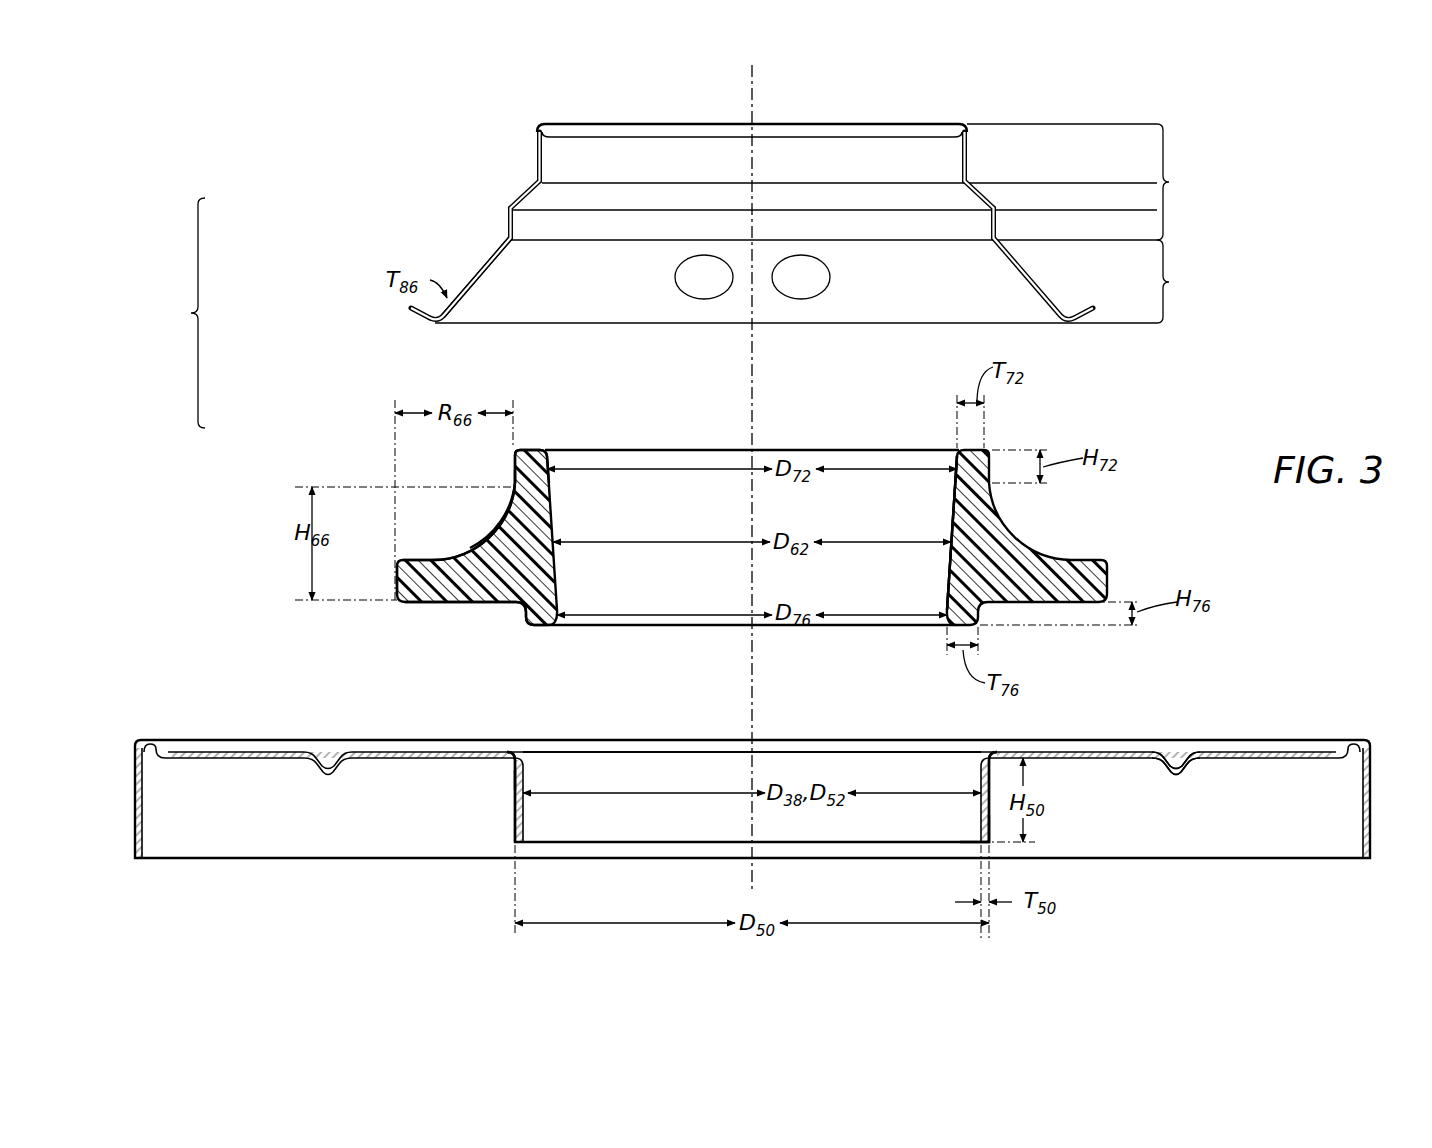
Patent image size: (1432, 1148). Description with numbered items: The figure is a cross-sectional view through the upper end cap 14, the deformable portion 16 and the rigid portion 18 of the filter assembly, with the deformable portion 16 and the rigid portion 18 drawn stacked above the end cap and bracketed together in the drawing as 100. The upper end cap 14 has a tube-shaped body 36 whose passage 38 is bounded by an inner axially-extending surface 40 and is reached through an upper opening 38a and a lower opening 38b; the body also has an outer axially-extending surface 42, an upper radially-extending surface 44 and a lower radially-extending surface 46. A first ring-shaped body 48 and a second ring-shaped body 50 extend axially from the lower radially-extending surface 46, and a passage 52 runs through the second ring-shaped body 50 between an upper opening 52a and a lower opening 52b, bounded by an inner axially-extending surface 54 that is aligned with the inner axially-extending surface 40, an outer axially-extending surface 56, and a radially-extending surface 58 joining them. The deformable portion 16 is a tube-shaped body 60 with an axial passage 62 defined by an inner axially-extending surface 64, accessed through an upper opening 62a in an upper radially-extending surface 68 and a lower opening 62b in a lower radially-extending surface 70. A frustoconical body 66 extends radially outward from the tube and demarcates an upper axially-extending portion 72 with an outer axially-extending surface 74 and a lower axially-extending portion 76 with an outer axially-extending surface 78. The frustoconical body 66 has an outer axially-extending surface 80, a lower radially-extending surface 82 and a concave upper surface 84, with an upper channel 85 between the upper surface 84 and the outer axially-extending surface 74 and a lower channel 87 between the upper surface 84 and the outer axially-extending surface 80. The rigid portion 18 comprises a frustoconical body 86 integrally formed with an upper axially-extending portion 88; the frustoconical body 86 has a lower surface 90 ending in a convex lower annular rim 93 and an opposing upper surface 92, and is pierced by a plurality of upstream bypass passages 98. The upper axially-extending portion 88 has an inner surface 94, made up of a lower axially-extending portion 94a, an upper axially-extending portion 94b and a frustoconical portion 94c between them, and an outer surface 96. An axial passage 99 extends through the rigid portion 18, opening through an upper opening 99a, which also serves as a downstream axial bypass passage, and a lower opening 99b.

The upper end cap 14 is at (143, 704).
The deformable portion 16 is at (345, 427).
The rigid portion 18 is at (447, 170).
The tube-shaped body 36 is at (1065, 749).
The passage 38 is at (796, 741).
The upper opening 38a is at (705, 751).
The lower opening 38b is at (778, 846).
The inner axially-extending surface 40 is at (980, 782).
The outer axially-extending surface 42 is at (1372, 778).
The upper radially-extending surface 44 is at (1232, 750).
The lower radially-extending surface 46 is at (1242, 759).
The first ring-shaped body 48 is at (131, 768).
The second ring-shaped body 50 is at (512, 808).
The passage 52 is at (645, 819).
The upper opening 52a is at (752, 725).
The lower opening 52b is at (752, 868).
The inner axially-extending surface 54 is at (524, 828).
The outer axially-extending surface 56 is at (513, 782).
The radially-extending surface 58 is at (982, 843).
The tube-shaped body 60 is at (969, 549).
The axial passage 62 is at (839, 509).
The upper opening 62a is at (711, 447).
The lower opening 62b is at (713, 628).
The inner axially-extending surface 64 is at (953, 515).
The frustoconical body 66 is at (497, 563).
The upper radially-extending surface 68 is at (535, 448).
The lower radially-extending surface 70 is at (535, 630).
The upper axially-extending portion 72 is at (540, 452).
The outer axially-extending surface 74 is at (513, 467).
The lower axially-extending portion 76 is at (525, 627).
The outer axially-extending surface 78 is at (527, 613).
The outer axially-extending surface 80 is at (397, 580).
The lower radially-extending surface 82 is at (430, 603).
The upper surface 84 is at (487, 527).
The upper groove or channel 85 is at (515, 485).
The frustoconical body 86 is at (855, 281).
The lower groove or channel 87 is at (428, 574).
The upper axially-extending portion 88 is at (871, 182).
The lower surface 90 is at (460, 310).
The upper surface 92 is at (497, 250).
The lower annular rim 93 is at (433, 327).
The inner surface 94 is at (513, 221).
The lower axially-extending portion 94a is at (993, 226).
The upper axially-extending portion 94b is at (964, 157).
The frustoconical portion 94c is at (979, 197).
The outer surface 96 is at (511, 218).
The upstream bypass passages 98 is at (793, 274).
The axial passage 99 is at (792, 224).
The upper opening 99a is at (735, 120).
The lower opening 99b is at (774, 330).
The bracket assembly 100 is at (176, 313).